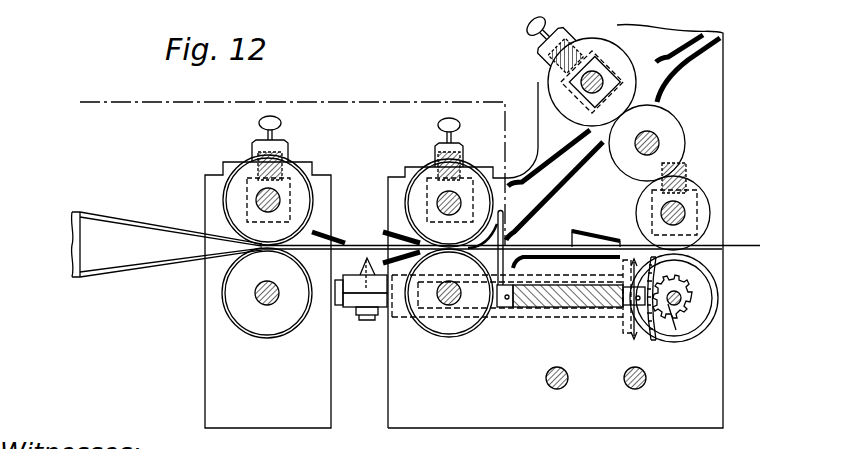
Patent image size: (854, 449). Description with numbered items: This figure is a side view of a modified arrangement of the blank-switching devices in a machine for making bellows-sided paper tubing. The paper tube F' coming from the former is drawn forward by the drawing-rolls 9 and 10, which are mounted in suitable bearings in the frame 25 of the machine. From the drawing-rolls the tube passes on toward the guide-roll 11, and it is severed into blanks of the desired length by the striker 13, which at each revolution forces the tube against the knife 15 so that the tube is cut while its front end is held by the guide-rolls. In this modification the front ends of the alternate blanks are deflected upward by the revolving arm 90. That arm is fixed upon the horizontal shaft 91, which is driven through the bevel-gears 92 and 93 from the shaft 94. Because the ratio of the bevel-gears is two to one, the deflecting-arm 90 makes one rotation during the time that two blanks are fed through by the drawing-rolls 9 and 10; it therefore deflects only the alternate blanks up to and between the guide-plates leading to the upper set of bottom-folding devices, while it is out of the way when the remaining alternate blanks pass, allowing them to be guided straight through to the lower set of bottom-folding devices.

The drawing-roll 9 is at (235, 197).
The drawing-roll 10 is at (240, 297).
The guide-roll 11 is at (765, 250).
The striker 13 is at (362, 290).
The knife 15 is at (337, 237).
The frame 25 is at (464, 226).
The revolving arm 90 is at (501, 243).
The horizontal shaft 91 is at (547, 304).
The bevel-gear 92 is at (650, 336).
The bevel-gear 93 is at (696, 299).
The shaft 94 is at (671, 310).
The strip material F' is at (167, 244).